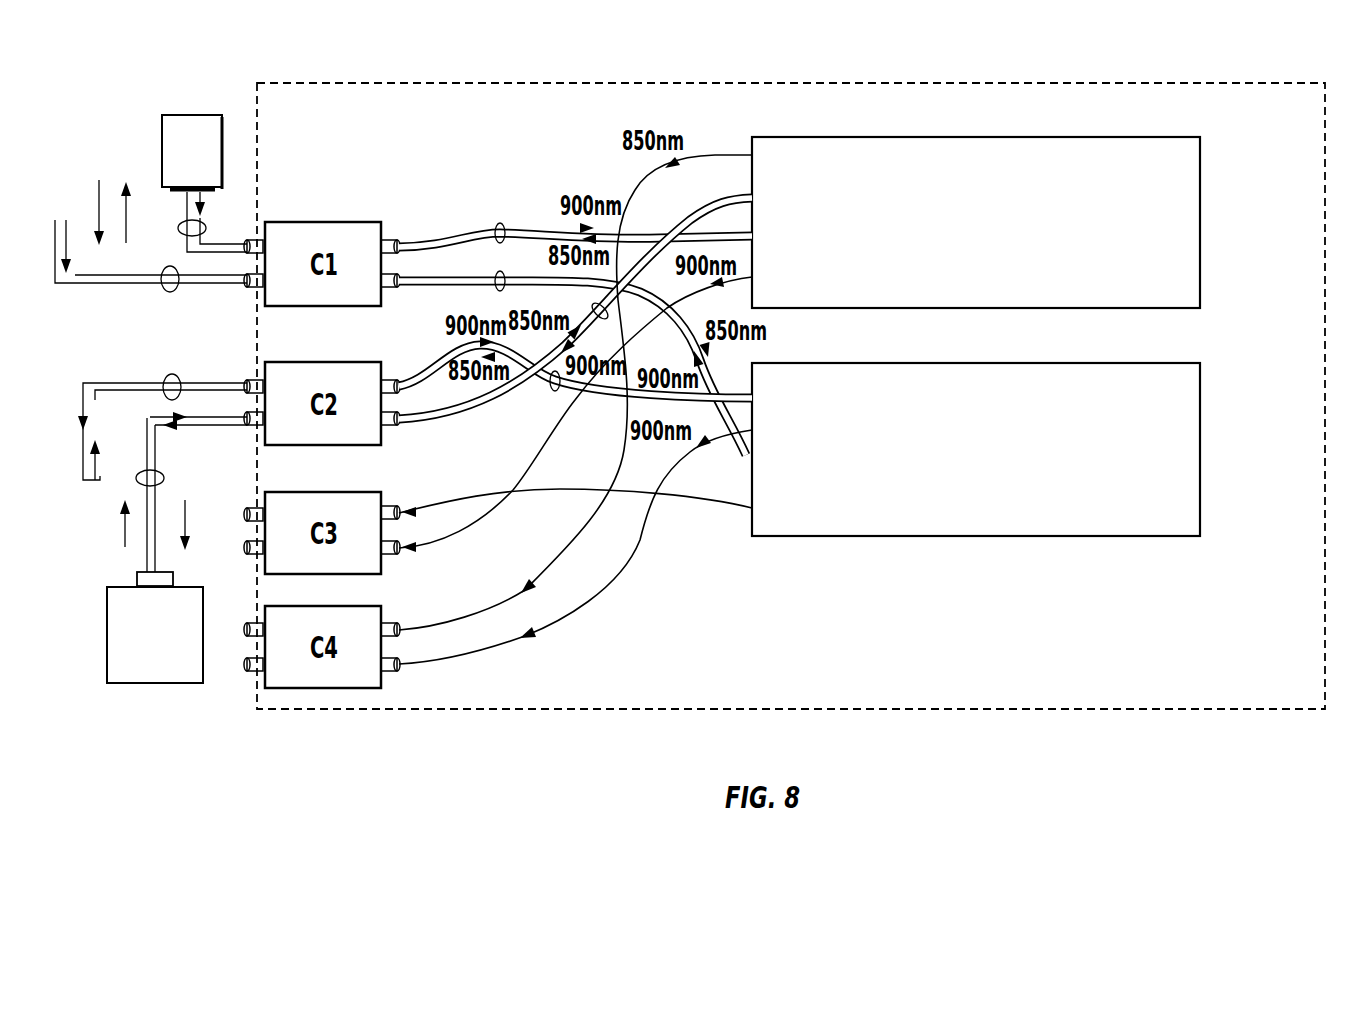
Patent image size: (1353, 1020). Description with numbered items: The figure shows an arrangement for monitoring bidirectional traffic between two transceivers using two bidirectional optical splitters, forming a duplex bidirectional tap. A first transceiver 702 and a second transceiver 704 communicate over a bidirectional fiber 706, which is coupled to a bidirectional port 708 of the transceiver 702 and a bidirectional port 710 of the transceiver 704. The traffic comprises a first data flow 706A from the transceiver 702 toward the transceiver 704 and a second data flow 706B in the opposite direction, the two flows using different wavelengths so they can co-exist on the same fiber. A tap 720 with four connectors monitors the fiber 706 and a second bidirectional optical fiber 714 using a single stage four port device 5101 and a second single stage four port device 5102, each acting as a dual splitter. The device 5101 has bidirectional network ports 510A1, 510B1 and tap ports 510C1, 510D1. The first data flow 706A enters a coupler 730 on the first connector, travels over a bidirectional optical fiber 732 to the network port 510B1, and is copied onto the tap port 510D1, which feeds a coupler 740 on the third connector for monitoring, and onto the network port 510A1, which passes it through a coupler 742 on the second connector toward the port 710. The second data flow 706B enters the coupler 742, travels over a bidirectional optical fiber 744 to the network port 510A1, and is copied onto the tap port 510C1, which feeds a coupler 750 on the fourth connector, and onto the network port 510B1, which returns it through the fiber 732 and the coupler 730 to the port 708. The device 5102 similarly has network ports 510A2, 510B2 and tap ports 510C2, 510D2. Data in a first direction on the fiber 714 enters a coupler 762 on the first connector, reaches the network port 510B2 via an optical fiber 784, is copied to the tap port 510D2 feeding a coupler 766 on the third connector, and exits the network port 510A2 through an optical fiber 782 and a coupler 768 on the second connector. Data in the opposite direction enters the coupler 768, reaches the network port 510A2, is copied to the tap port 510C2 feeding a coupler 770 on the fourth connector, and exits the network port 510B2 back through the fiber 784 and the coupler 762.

The transceiver 702 is at (192, 152).
The transceiver 704 is at (155, 635).
The bidirectional fiber 706 is at (183, 226).
The first data flow 706A is at (95, 200).
The second data flow 706B is at (138, 200).
The bidirectional port 708 is at (206, 190).
The bidirectional port 710 is at (173, 580).
The bidirectional optical fiber 714 is at (172, 293).
The tap 720 is at (1240, 709).
The coupler 730 is at (389, 240).
The bidirectional optical fiber 732 is at (502, 222).
The coupler 740 is at (393, 556).
The coupler 742 is at (393, 426).
The bidirectional optical fiber 744 is at (600, 310).
The coupler 750 is at (392, 622).
The coupler 762 is at (393, 288).
The coupler 766 is at (392, 505).
The coupler 768 is at (391, 380).
The coupler 770 is at (393, 671).
The optical fiber 782 is at (553, 392).
The optical fiber 784 is at (498, 292).
The single stage four port network tap device 5101 is at (1013, 137).
The single stage four port network tap device 5102 is at (1013, 363).
The bidirectional network port 510A1 is at (694, 219).
The bidirectional network port 510B1 is at (754, 232).
The tap port 510C1 is at (723, 152).
The tap port 510D1 is at (754, 283).
The bidirectional network port 510A2 is at (742, 393).
The bidirectional network port 510B2 is at (745, 460).
The tap port 510C2 is at (745, 432).
The tap port 510D2 is at (748, 512).